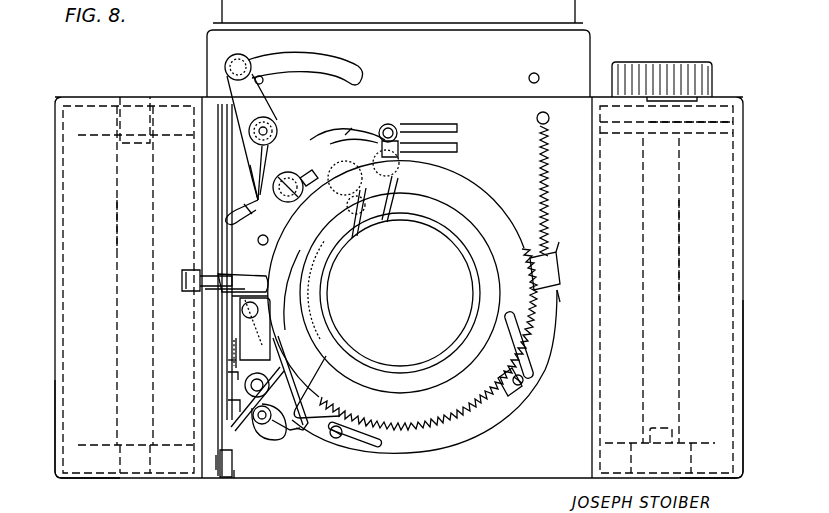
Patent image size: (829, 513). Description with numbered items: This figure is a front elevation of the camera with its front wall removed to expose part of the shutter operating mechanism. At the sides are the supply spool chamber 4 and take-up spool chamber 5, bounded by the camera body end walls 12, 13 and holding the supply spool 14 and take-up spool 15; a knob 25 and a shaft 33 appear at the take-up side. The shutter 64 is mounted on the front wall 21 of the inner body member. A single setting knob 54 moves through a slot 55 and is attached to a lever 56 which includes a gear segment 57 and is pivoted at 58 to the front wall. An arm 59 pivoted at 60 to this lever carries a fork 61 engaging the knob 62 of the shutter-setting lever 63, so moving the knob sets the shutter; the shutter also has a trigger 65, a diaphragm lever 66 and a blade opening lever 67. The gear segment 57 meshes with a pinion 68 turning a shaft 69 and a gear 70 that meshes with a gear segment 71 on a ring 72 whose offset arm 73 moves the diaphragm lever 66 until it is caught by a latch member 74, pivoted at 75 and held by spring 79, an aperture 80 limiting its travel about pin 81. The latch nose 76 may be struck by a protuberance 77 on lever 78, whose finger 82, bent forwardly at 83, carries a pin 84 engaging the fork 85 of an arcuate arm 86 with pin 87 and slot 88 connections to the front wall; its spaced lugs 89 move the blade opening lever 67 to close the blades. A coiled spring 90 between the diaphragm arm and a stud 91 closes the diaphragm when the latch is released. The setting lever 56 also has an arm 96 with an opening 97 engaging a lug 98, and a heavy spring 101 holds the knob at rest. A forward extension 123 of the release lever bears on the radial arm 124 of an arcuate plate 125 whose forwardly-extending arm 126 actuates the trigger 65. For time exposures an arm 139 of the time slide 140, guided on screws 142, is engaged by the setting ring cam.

The supply spool chamber 4 is at (62, 257).
The take-up spool chamber 5 is at (730, 203).
The camera body end wall 12 is at (56, 408).
The camera body end wall 13 is at (744, 352).
The supply spool 14 is at (116, 228).
The take-up spool 15 is at (680, 252).
The front wall 21 is at (507, 125).
The winding knob 25 is at (648, 68).
The spool shaft 33 is at (735, 128).
The setting knob 54 is at (225, 66).
The slot 55 is at (343, 62).
The setting lever 56 is at (233, 88).
The gear segment 57 is at (325, 138).
The pivot 58 is at (283, 173).
The arm 59 is at (363, 133).
The pivot 60 is at (268, 118).
The fork 61 is at (452, 130).
The knob 62 is at (392, 125).
The shutter-setting lever 63 is at (400, 148).
The shutter 64 is at (481, 193).
The shutter trigger 65 is at (305, 181).
The diaphragm lever 66 is at (316, 418).
The blade opening lever 67 is at (560, 270).
The pinion 68 is at (376, 184).
The shaft 69 is at (354, 214).
The gear 70 is at (352, 128).
The gear segment 71 is at (303, 285).
The ring 72 is at (476, 245).
The offset arm 73 is at (510, 396).
The latch member 74 is at (313, 426).
The pivot 75 is at (246, 386).
The nose 76 is at (232, 363).
The protuberance 77 is at (232, 375).
The lever 78 is at (236, 406).
The spring 79 is at (289, 432).
The aperture 80 is at (272, 441).
The pin 81 is at (256, 421).
The finger 82 is at (264, 336).
The bend 83 is at (230, 344).
The pin 84 is at (258, 312).
The fork 85 is at (240, 298).
The arcuate arm 86 is at (445, 448).
The pin 87 is at (524, 384).
The slot 88 is at (532, 352).
The upstanding lugs 89 is at (558, 254).
The coiled spring 90 is at (480, 421).
The stud 91 is at (550, 120).
The arm 96 is at (254, 240).
The opening 97 is at (243, 193).
The lug 98 is at (228, 210).
The spring 101 is at (272, 150).
The forward extension 123 is at (230, 240).
The radially-extending arm 124 is at (222, 277).
The arcuate plate 125 is at (270, 266).
The forwardly-extending arm 126 is at (322, 205).
The arm 139 is at (278, 352).
The time slide 140 is at (235, 478).
The screws 142 is at (221, 468).